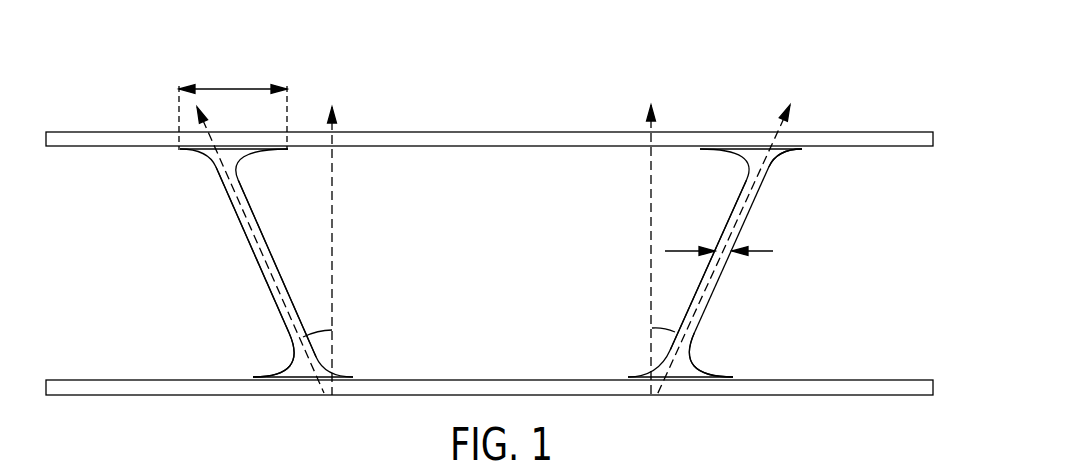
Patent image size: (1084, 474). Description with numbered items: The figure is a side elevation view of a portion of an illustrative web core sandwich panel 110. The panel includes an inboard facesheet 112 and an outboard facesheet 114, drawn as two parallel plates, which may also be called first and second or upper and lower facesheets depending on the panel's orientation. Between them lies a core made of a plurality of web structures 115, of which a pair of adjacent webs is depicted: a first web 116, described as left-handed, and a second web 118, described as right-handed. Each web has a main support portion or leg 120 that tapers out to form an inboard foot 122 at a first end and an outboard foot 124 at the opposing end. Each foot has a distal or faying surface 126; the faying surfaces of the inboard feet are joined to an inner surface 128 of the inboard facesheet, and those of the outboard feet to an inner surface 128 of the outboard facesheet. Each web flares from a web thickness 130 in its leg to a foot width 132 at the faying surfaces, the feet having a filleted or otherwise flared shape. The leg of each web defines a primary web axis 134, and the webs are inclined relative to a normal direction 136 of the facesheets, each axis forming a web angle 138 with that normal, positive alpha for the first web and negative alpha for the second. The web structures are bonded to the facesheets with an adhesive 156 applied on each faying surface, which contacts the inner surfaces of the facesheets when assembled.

The sandwich panel 110 is at (128, 82).
The inboard facesheet 112 is at (896, 380).
The outboard facesheet 114 is at (927, 132).
The web structures 115 is at (180, 180).
The first web 116 is at (280, 278).
The second web 118 is at (693, 295).
The leg 120 is at (243, 223).
The inboard foot 122 is at (303, 365).
The outboard foot 124 is at (245, 157).
The faying surface 126 is at (262, 125).
The inner surface 128 is at (488, 170).
The web thickness 130 is at (776, 251).
The foot width 132 is at (240, 88).
The primary web axis 134 is at (258, 258).
The normal direction 136 is at (333, 183).
The web angle 138 is at (307, 333).
The adhesive 156 is at (802, 148).